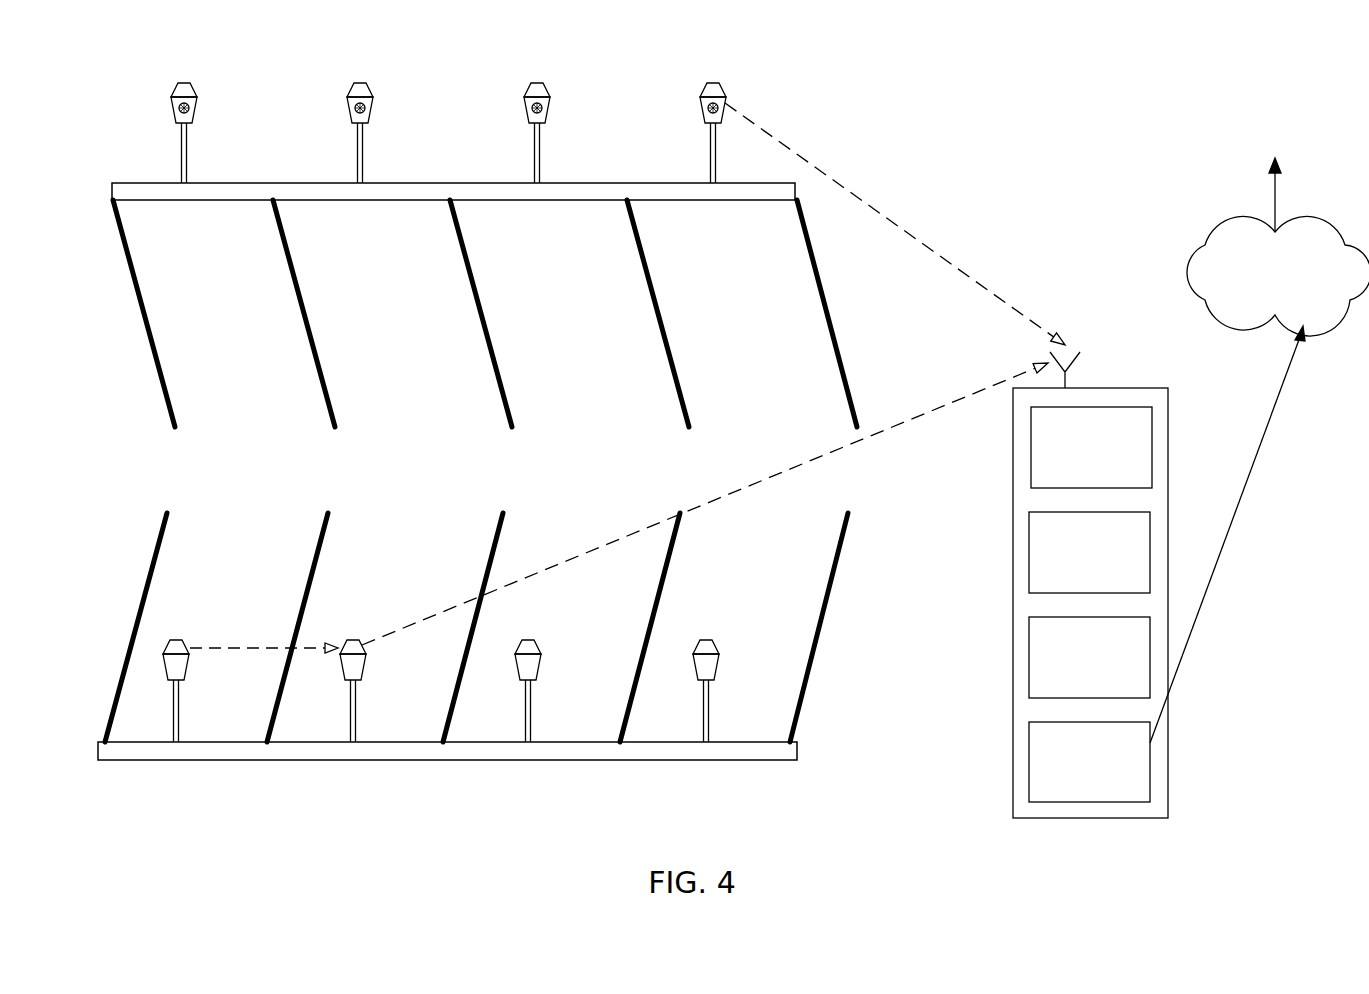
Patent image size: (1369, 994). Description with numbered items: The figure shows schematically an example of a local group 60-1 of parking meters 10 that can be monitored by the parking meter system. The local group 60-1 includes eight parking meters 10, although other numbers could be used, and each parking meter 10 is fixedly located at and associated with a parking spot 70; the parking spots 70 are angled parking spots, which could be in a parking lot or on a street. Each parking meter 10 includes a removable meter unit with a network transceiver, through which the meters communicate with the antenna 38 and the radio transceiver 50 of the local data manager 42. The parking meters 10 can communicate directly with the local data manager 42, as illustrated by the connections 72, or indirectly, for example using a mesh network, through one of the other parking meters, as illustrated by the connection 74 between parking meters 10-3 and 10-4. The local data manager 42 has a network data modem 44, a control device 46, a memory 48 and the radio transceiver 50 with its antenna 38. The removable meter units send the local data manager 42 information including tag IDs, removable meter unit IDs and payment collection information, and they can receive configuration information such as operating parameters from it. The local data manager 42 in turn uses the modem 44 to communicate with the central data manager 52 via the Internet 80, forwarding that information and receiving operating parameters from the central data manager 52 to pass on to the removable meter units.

The parking meter 10 is at (180, 86).
The parking meter 10-3 is at (178, 643).
The parking meter 10-4 is at (350, 655).
The parking spot 70 is at (764, 565).
The connection 72 is at (949, 266).
The connection 74 is at (243, 648).
The antenna 38 is at (1068, 360).
The local data manager 42 is at (1013, 497).
The network data modem 44 is at (1150, 762).
The control device 46 is at (1029, 633).
The memory 48 is at (1150, 527).
The radio transceiver 50 is at (1152, 430).
The central data manager 52 is at (1275, 156).
The local group 60-1 is at (1068, 107).
The Internet 80 is at (1215, 228).